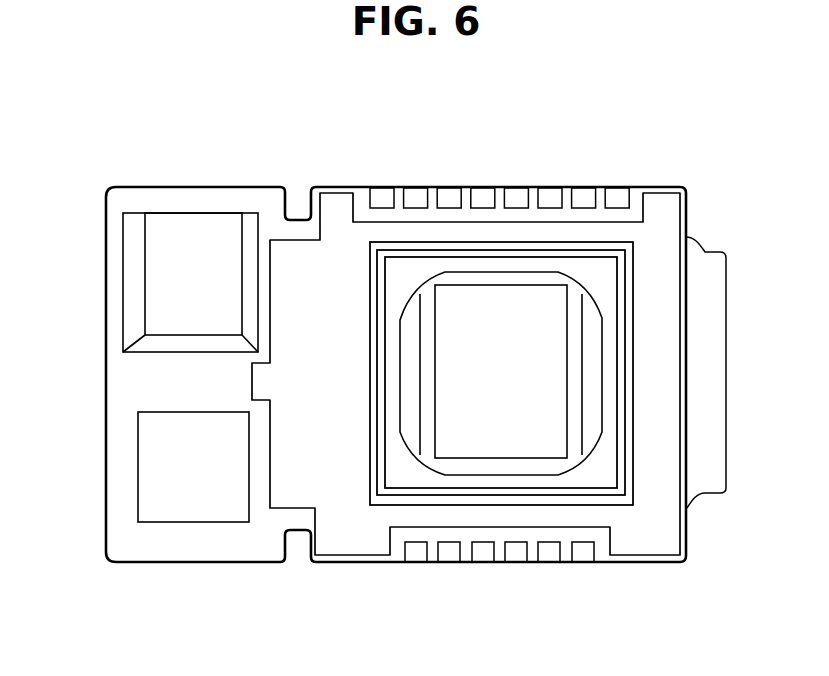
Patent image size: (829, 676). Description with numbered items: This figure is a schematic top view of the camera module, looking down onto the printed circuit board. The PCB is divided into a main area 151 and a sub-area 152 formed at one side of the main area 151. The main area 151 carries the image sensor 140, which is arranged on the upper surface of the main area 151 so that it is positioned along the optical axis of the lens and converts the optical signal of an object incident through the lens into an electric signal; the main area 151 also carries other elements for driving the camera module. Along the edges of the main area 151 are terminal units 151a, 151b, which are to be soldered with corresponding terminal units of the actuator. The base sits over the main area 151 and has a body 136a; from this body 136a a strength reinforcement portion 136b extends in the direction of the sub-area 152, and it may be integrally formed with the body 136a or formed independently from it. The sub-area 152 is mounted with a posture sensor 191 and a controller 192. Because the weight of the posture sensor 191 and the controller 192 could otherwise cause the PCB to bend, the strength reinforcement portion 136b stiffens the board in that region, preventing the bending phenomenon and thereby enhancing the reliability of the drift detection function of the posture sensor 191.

The image sensor 140 is at (507, 325).
The main area 151 is at (640, 196).
The terminal unit 151a is at (480, 552).
The terminal unit 151b is at (450, 190).
The sub-area 152 is at (147, 198).
The body 136a is at (657, 232).
The strength reinforcement portion 136b is at (290, 268).
The posture sensor 191 is at (168, 507).
The controller 192 is at (168, 280).